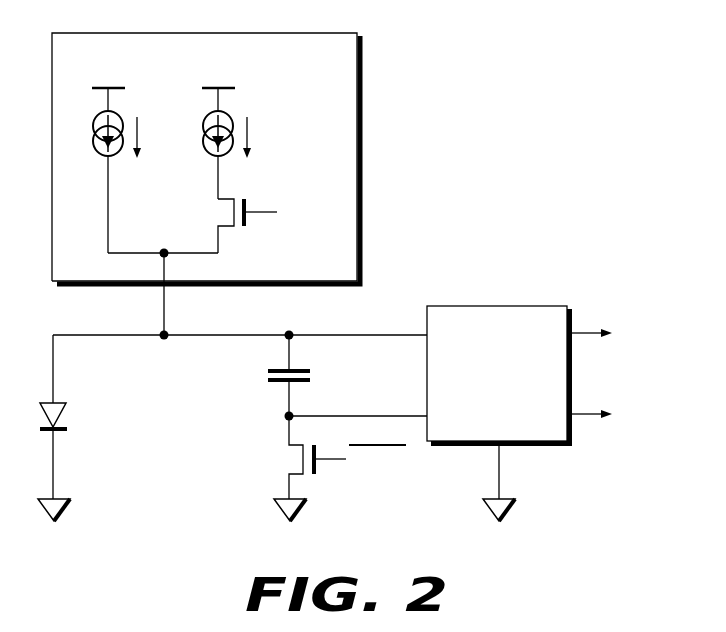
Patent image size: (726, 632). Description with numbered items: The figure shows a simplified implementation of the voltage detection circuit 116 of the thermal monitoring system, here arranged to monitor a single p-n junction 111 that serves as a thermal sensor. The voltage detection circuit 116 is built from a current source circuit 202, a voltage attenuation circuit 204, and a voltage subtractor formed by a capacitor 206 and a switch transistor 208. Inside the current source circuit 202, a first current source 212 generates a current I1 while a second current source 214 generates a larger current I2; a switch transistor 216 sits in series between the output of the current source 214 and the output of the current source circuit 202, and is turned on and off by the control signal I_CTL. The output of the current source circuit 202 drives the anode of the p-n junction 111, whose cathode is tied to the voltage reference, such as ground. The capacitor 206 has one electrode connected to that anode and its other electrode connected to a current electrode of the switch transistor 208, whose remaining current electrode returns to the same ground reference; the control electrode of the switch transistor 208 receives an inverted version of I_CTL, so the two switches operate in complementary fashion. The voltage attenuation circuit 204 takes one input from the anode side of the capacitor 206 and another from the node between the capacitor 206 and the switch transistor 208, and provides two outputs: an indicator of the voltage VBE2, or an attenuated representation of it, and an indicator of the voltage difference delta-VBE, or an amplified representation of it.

The voltage detection circuit 116 is at (403, 280).
The current source circuit 202 is at (363, 108).
The current source 212 is at (118, 153).
The current source 214 is at (228, 153).
The switch transistor 216 is at (231, 212).
The p-n junction 111 is at (60, 418).
The capacitor 206 is at (270, 384).
The switch transistor 208 is at (299, 457).
The voltage attenuation circuit 204 is at (539, 306).